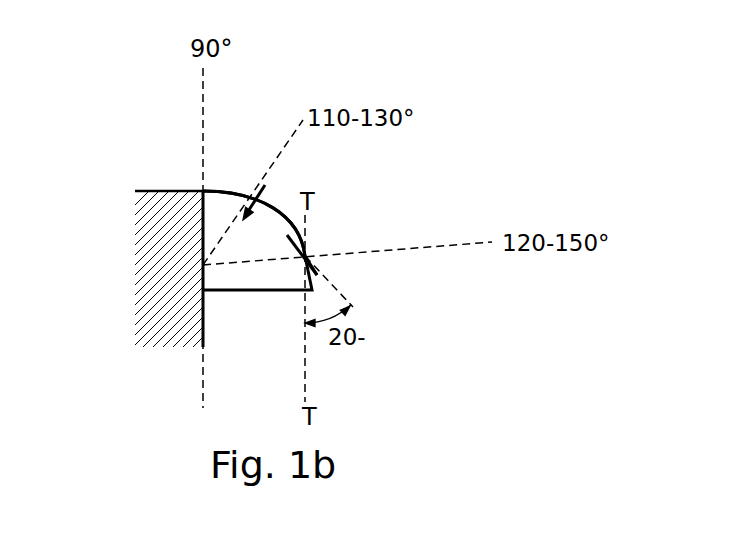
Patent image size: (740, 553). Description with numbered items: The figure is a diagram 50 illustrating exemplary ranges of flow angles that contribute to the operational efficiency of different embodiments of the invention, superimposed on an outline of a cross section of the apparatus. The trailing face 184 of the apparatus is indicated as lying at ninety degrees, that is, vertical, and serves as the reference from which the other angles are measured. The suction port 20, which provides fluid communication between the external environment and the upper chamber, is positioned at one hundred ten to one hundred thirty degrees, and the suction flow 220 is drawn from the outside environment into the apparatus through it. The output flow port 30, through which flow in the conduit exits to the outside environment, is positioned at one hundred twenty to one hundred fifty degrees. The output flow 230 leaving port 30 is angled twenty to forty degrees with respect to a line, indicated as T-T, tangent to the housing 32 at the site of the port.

The diagram 50 is at (148, 108).
The trailing face 184 is at (202, 267).
The suction port 20 is at (271, 190).
The housing 32 is at (225, 190).
The suction flow 220 is at (243, 220).
The output flow port 30 is at (307, 256).
The output flow 230 is at (320, 268).